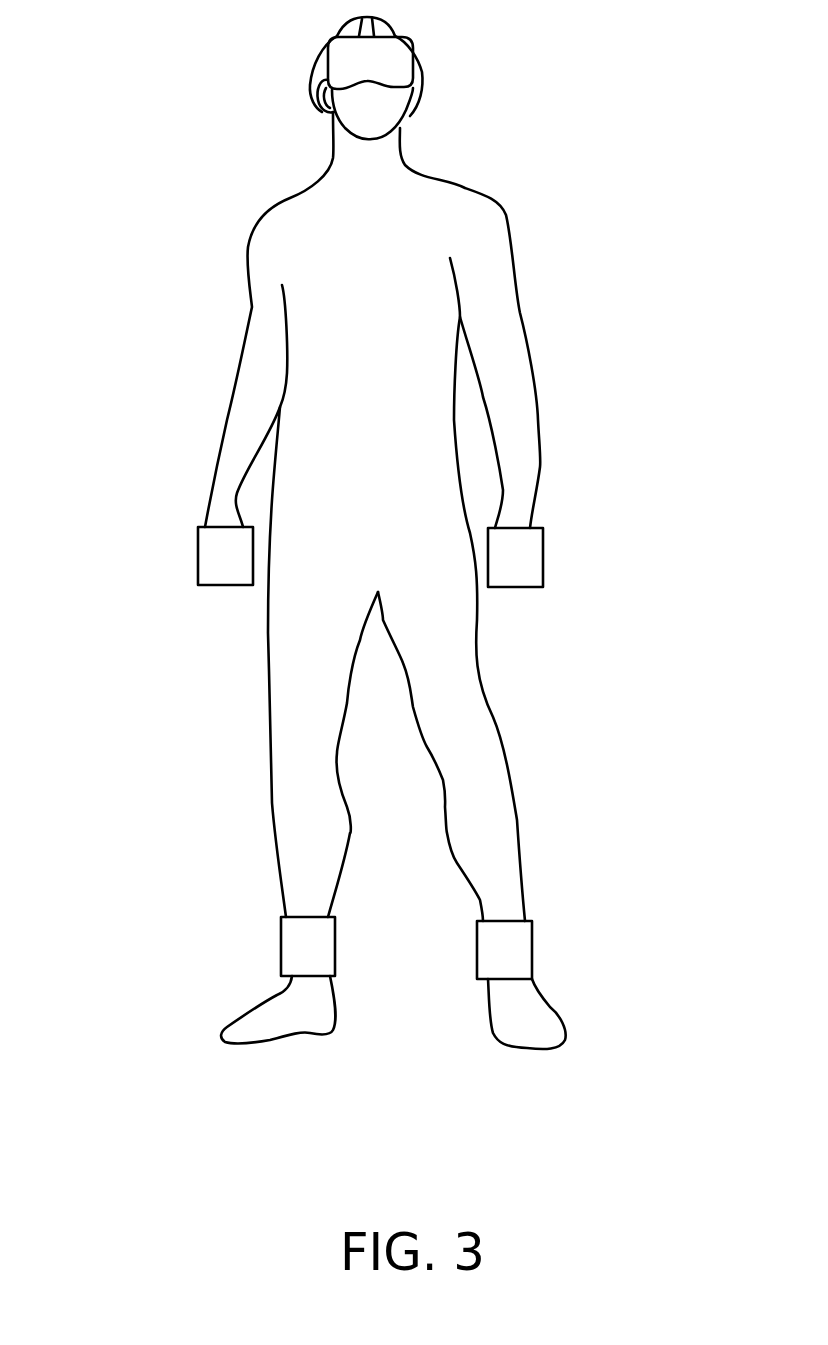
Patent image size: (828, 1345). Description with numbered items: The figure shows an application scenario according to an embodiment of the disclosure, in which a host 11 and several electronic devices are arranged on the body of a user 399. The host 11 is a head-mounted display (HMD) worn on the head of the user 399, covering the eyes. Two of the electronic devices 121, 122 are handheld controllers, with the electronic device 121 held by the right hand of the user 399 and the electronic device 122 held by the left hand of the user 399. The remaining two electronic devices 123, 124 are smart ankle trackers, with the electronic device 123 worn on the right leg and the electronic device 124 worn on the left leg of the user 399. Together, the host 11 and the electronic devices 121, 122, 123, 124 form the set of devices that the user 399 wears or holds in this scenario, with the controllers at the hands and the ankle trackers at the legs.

The host 11 is at (410, 68).
The user 399 is at (487, 233).
The electronic device 121 is at (198, 557).
The electronic device 122 is at (530, 562).
The electronic device 123 is at (292, 942).
The electronic device 124 is at (518, 952).